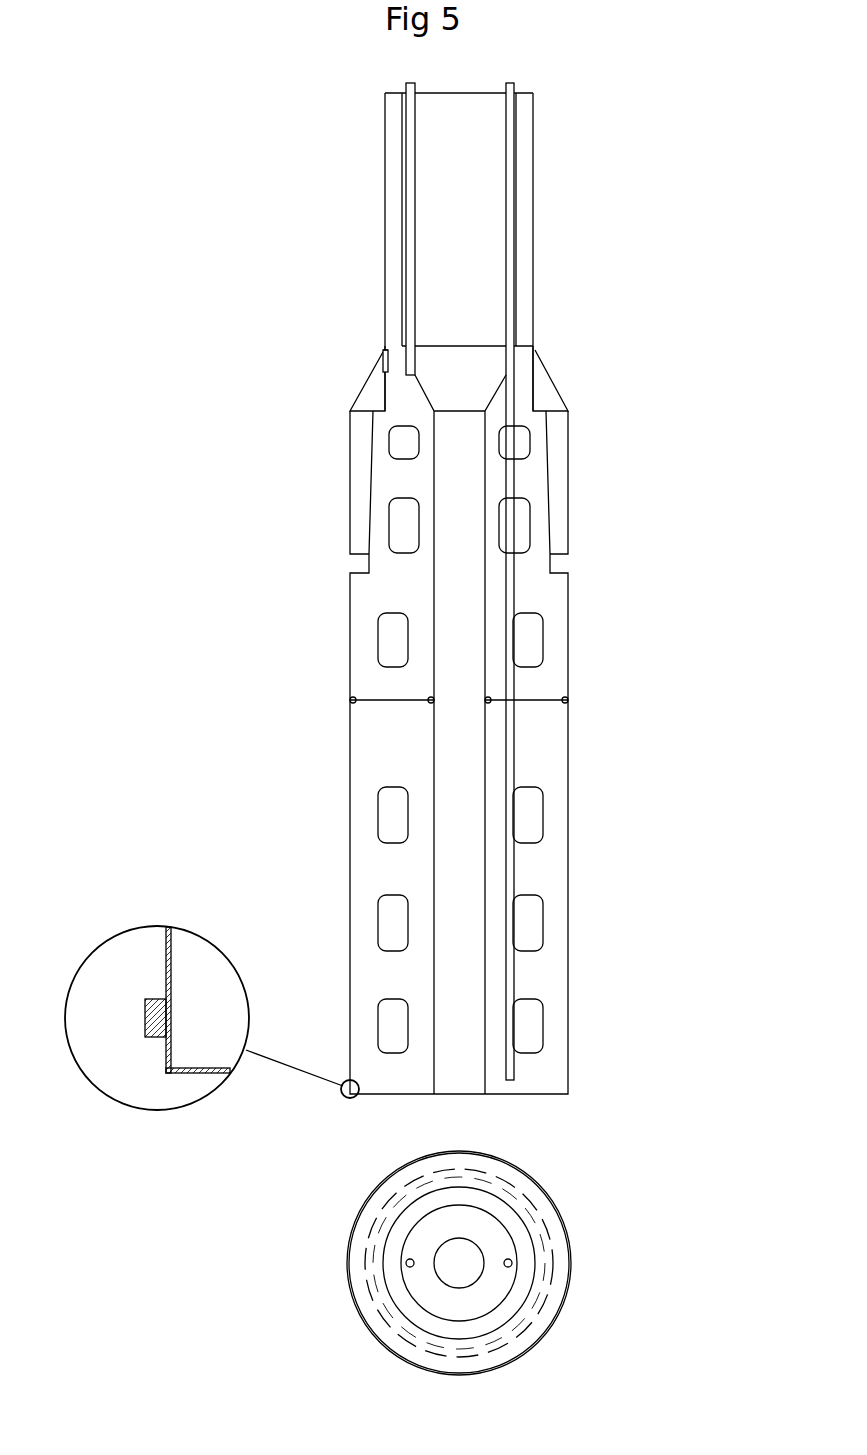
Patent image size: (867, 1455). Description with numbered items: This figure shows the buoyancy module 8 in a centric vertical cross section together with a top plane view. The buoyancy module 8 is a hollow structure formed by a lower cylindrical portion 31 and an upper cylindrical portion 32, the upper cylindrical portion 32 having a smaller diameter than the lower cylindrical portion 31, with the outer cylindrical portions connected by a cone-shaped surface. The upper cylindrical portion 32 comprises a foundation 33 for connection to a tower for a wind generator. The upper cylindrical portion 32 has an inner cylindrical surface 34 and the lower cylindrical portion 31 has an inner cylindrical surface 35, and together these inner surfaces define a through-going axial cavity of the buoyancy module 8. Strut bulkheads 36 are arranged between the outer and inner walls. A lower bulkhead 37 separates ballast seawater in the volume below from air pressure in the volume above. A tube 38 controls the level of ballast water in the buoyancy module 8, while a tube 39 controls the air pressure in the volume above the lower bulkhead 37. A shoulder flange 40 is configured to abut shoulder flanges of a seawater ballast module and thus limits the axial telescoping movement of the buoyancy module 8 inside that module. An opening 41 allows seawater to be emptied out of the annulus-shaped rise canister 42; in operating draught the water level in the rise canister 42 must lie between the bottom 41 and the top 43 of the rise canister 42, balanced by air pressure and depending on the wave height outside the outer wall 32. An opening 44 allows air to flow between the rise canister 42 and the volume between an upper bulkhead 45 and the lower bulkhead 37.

The buoyancy module 8 is at (533, 122).
The lower cylindrical portion 31 is at (569, 758).
The upper cylindrical portion 32 is at (533, 182).
The foundation 33 is at (459, 252).
The inner cylindrical surface 34 is at (517, 260).
The inner cylindrical surface 35 is at (485, 485).
The strut bulkheads 36 is at (545, 855).
The lower bulkhead 37 is at (568, 699).
The tube 38 is at (513, 598).
The tube 39 is at (410, 216).
The shoulder flange 40 is at (145, 999).
The opening 41 is at (358, 555).
The rise canister 42 is at (357, 482).
The top of the rise canister 43 is at (352, 412).
The opening 44 is at (383, 362).
The upper bulkhead 45 is at (385, 344).